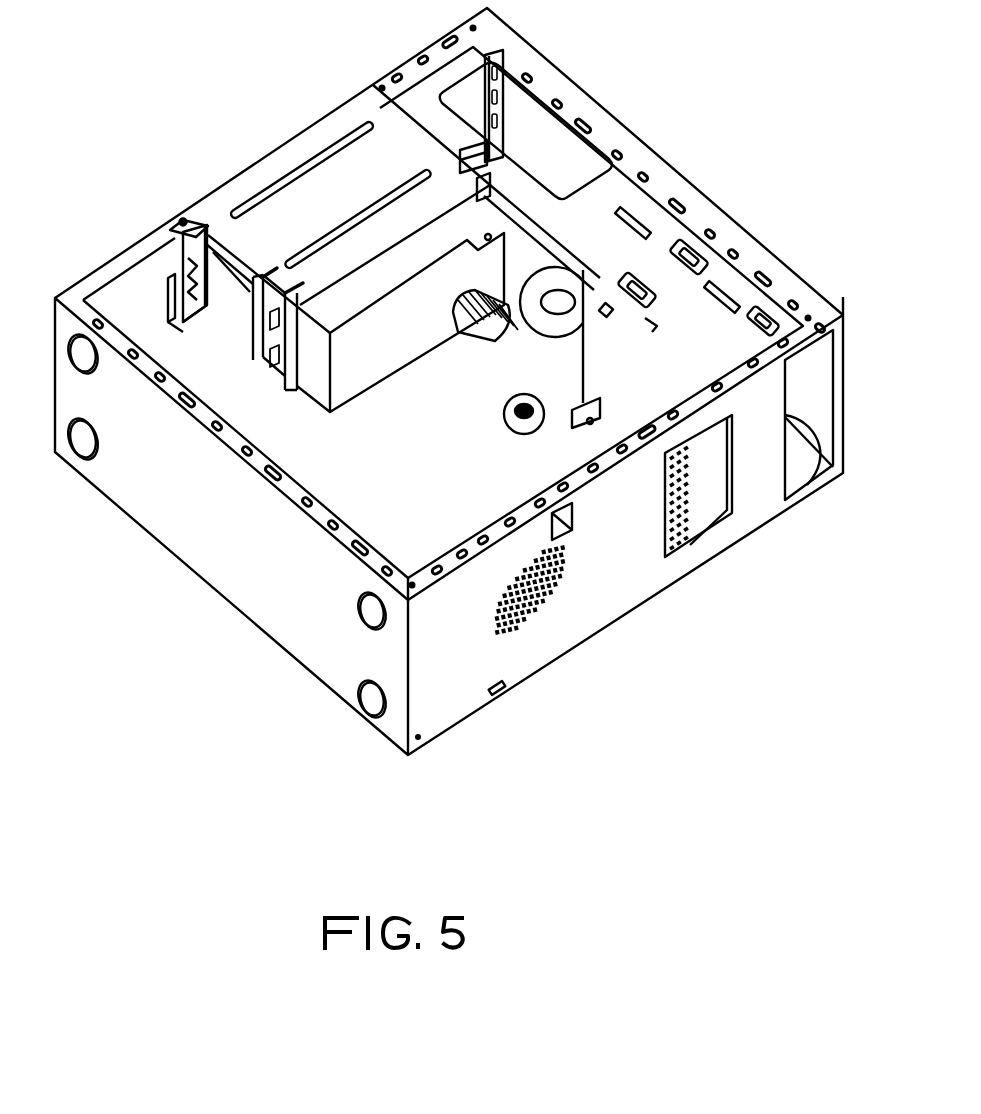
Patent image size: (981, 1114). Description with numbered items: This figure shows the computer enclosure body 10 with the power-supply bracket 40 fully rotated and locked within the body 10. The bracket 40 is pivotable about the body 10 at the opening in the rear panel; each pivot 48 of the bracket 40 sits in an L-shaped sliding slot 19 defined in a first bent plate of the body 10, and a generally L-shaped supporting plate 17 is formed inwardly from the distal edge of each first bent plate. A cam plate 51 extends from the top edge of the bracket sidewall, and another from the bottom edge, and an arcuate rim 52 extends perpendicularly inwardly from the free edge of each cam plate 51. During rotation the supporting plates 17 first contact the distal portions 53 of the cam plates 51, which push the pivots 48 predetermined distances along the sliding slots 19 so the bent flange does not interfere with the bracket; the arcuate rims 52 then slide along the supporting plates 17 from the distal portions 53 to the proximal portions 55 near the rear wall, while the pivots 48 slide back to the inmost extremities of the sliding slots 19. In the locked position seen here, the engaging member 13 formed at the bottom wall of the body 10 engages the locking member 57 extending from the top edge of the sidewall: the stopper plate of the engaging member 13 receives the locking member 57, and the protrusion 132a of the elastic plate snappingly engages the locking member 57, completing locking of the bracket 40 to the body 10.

The body 10 is at (700, 172).
The engaging member 13 is at (462, 152).
The protrusion 132a is at (480, 185).
The supporting plate 17 is at (183, 222).
The sliding slot 19 is at (166, 262).
The bracket 40 is at (315, 108).
The pivot 48 is at (180, 333).
The cam plate 51 is at (224, 262).
The arcuate rim 52 is at (200, 300).
The distal portion 53 is at (218, 292).
The proximal portion 55 is at (218, 240).
The locking member 57 is at (495, 195).